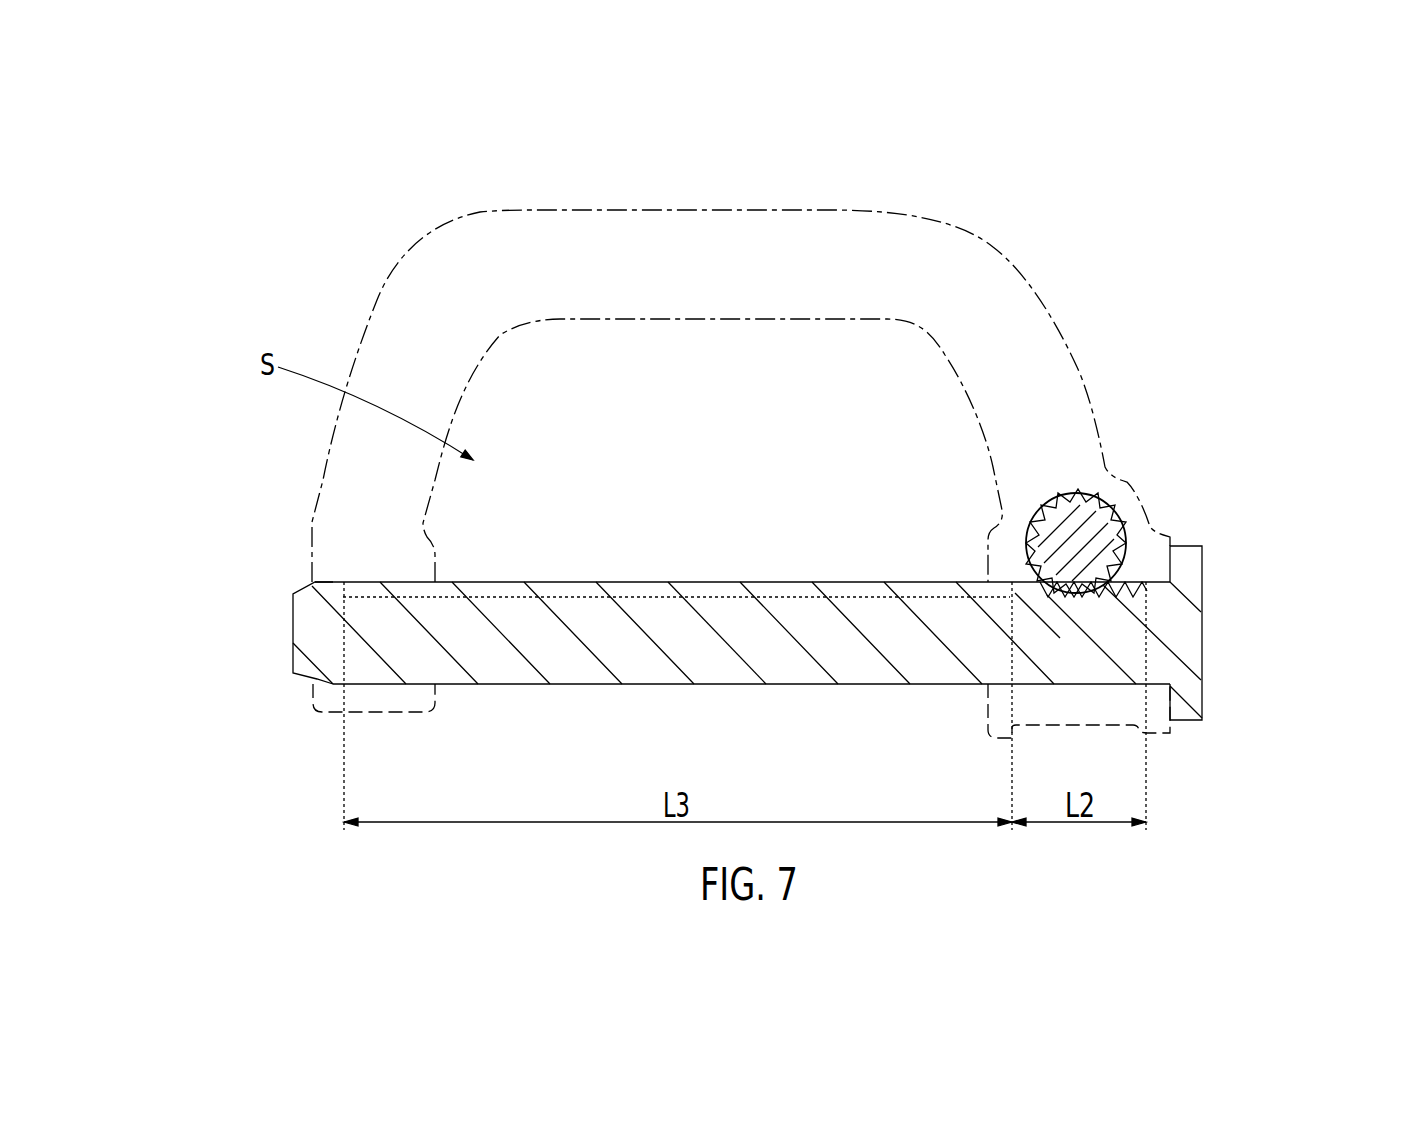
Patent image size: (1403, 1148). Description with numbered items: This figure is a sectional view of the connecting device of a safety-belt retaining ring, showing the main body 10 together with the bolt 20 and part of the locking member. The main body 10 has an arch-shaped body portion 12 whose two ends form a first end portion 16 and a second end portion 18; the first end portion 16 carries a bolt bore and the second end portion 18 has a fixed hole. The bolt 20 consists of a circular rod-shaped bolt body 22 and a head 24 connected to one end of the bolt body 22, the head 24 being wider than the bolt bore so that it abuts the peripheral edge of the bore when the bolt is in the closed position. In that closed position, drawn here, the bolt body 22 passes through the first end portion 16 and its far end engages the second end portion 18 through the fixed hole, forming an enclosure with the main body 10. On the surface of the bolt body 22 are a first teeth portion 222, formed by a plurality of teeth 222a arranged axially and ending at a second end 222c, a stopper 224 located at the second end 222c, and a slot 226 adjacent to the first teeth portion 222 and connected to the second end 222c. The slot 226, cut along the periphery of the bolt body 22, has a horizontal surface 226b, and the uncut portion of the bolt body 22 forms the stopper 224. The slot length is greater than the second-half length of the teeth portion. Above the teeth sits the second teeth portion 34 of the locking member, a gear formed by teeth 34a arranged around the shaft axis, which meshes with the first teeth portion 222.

The main body 10 is at (1003, 252).
The body portion 12 is at (441, 242).
The first end portion 16 is at (1170, 730).
The second end portion 18 is at (330, 711).
The bolt 20 is at (567, 685).
The bolt body 22 is at (808, 685).
The head 24 is at (1202, 650).
The second teeth portion 34 is at (1098, 503).
The teeth 34a is at (1063, 490).
The first teeth portion 222 is at (1145, 593).
The teeth 222a is at (1130, 582).
The second end 222c is at (1030, 585).
The stopper 224 is at (1032, 593).
The slot 226 is at (477, 598).
The horizontal surface 226b is at (657, 600).